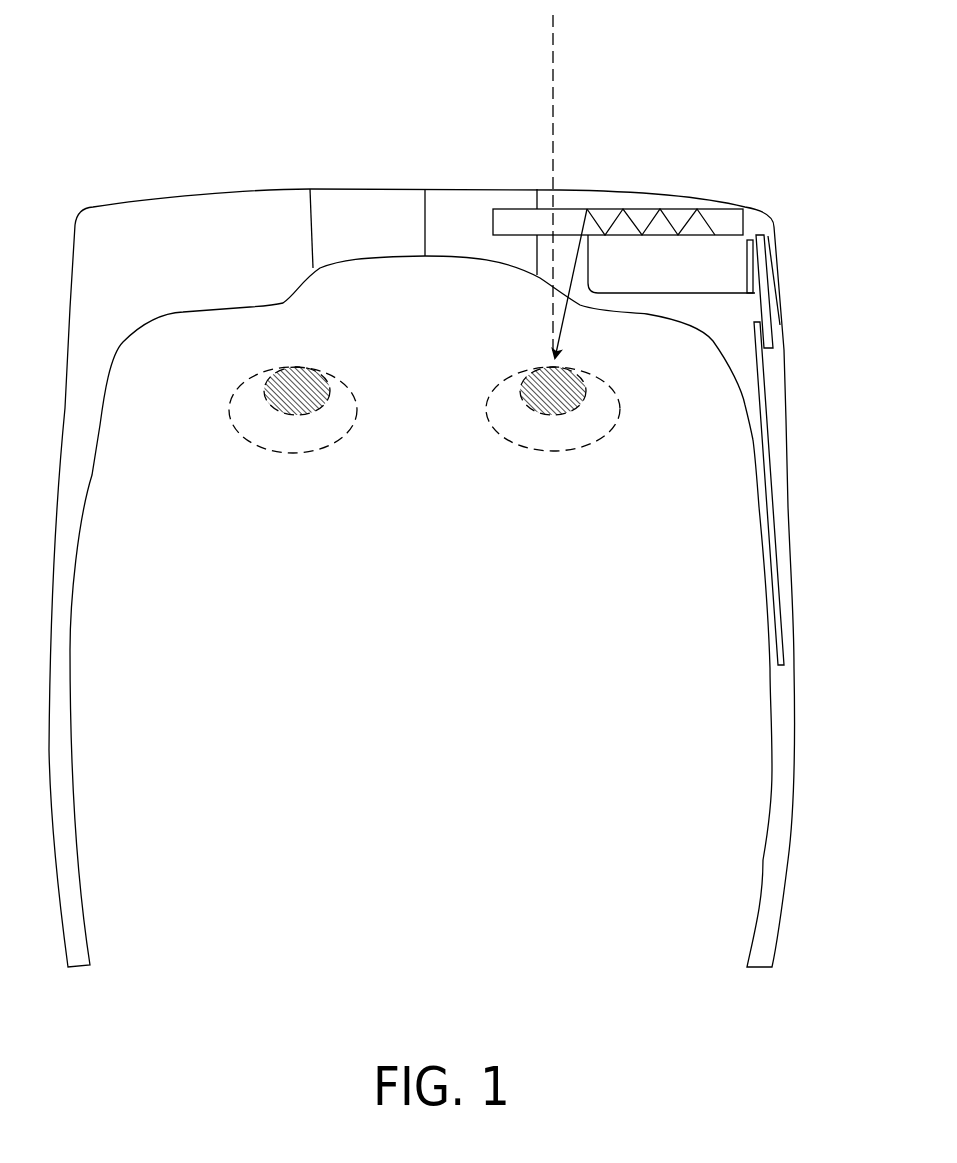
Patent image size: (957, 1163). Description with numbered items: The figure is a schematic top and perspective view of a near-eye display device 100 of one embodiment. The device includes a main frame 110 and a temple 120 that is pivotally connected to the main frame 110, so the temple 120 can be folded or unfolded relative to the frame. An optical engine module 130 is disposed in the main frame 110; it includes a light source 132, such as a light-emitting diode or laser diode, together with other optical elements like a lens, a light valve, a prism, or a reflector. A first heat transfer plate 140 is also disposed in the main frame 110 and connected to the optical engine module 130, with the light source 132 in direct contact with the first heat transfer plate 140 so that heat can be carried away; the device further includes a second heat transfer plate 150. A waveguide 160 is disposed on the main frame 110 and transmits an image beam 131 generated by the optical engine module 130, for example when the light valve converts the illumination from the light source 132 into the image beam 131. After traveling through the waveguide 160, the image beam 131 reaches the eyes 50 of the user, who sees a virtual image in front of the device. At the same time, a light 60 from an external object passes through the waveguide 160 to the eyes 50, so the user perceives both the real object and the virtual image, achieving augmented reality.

The near-eye display device 100 is at (735, 133).
The main frame 110 is at (462, 203).
The temple 120 is at (785, 718).
The optical engine module 130 is at (723, 250).
The image beam 131 is at (677, 212).
The light source 132 is at (753, 263).
The first heat transfer plate 140 is at (763, 310).
The second heat transfer plate 150 is at (763, 380).
The waveguide 160 is at (517, 217).
The light 60 is at (553, 80).
The eyes 50 is at (593, 432).